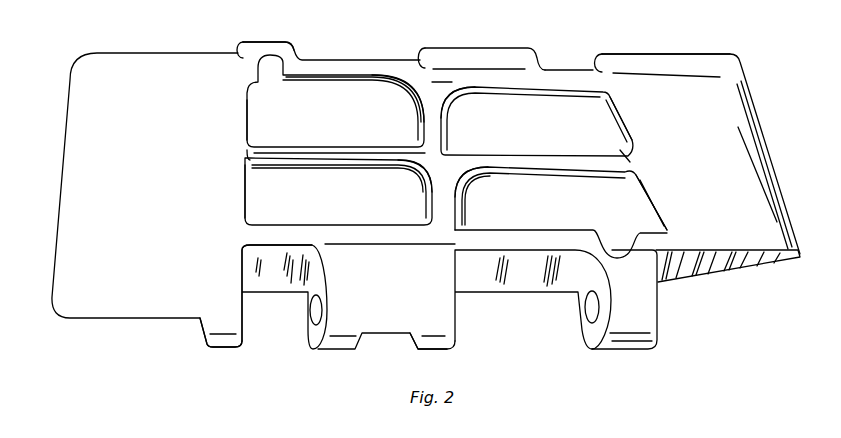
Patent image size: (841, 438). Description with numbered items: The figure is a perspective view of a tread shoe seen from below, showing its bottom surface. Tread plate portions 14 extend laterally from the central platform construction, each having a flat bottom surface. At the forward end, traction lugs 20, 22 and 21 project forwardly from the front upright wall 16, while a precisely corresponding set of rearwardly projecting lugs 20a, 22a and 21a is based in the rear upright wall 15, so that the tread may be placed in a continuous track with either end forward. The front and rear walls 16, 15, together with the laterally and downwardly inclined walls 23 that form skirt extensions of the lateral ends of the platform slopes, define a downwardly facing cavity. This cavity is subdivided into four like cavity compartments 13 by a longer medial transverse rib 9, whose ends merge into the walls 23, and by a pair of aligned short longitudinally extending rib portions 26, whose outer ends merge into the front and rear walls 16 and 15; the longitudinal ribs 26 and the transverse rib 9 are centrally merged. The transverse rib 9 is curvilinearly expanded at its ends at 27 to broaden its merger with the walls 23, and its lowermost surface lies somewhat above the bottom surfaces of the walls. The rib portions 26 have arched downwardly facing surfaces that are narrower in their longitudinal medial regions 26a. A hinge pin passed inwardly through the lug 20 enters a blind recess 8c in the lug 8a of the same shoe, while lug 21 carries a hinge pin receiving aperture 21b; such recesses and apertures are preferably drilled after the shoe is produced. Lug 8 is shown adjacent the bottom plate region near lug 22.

The tread plate portion 14 is at (118, 103).
The rear upright wall 15 is at (397, 64).
The rearwardly projecting lug 21a is at (268, 42).
The rearwardly projecting lug 22a is at (472, 53).
The rearwardly projecting lug 20a is at (604, 58).
The cavity compartment 13 is at (456, 156).
The laterally and downwardly inclined wall 23 is at (247, 116).
The longitudinal medial region 26a is at (420, 127).
The longitudinally extending rib portion 26 is at (441, 131).
The curvilinearly expanded end of transverse rib 27 is at (252, 160).
The medial transverse rib 9 is at (340, 155).
The lug 8a is at (322, 347).
The blind recess 8c is at (312, 318).
The forwardly projecting traction lug 22 is at (375, 320).
The hinge 8 is at (437, 340).
The front upright wall 16 is at (475, 240).
The hinge pin receiving aperture 21b is at (588, 312).
The forwardly projecting traction lug 21 is at (600, 348).
The forwardly projecting traction lug 20 is at (200, 346).